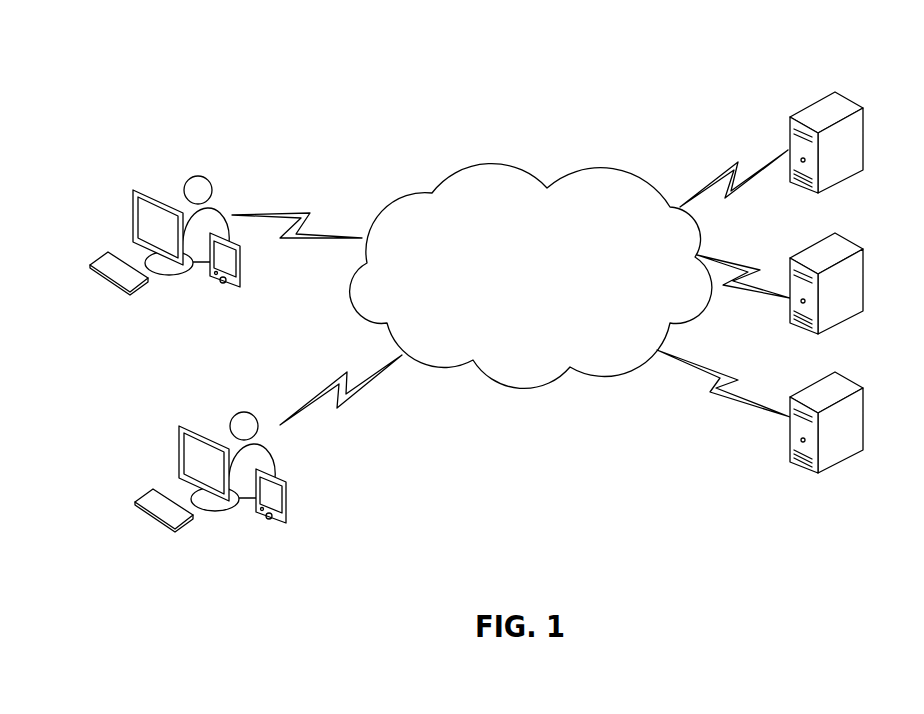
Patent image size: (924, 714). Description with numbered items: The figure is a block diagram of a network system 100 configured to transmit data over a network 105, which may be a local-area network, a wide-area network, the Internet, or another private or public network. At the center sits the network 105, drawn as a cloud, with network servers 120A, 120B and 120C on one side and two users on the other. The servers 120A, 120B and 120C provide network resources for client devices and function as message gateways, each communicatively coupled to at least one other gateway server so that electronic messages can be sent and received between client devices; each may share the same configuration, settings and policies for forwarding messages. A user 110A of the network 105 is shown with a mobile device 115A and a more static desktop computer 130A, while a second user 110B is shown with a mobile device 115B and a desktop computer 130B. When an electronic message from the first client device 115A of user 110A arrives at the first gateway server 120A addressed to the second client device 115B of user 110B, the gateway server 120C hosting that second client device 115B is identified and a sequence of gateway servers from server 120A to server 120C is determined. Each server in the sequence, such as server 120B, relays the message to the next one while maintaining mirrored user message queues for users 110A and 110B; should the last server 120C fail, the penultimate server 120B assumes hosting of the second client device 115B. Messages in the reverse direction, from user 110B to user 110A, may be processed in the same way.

The network system 100 is at (258, 54).
The network 105 is at (390, 200).
The user 110A is at (190, 183).
The user 110B is at (258, 447).
The mobile device 115A is at (228, 287).
The mobile device 115B is at (283, 522).
The gateway server 120A is at (853, 100).
The gateway server 120B is at (853, 240).
The gateway server 120C is at (853, 380).
The desktop computer 130A is at (105, 247).
The desktop computer 130B is at (162, 488).